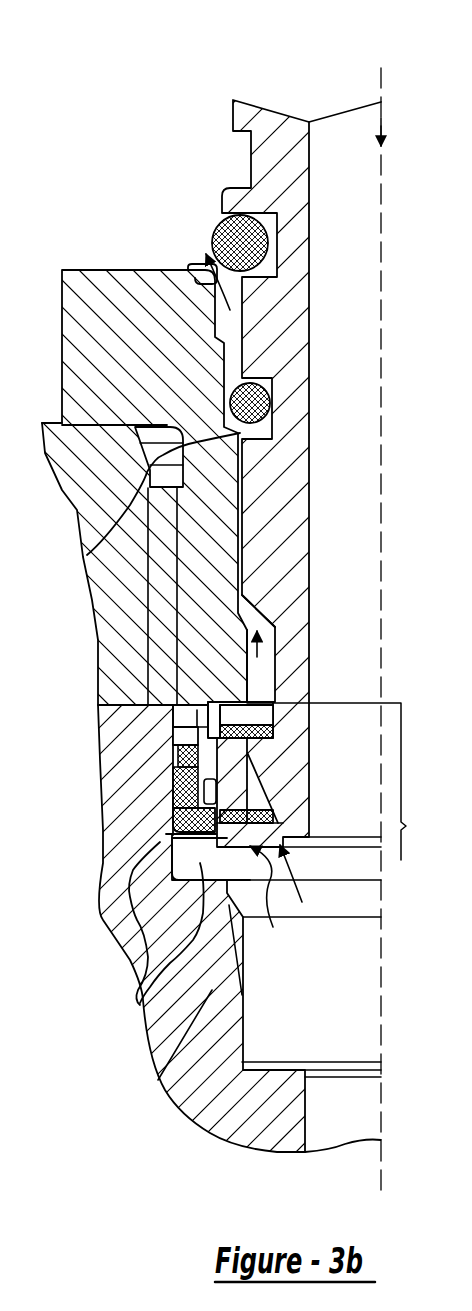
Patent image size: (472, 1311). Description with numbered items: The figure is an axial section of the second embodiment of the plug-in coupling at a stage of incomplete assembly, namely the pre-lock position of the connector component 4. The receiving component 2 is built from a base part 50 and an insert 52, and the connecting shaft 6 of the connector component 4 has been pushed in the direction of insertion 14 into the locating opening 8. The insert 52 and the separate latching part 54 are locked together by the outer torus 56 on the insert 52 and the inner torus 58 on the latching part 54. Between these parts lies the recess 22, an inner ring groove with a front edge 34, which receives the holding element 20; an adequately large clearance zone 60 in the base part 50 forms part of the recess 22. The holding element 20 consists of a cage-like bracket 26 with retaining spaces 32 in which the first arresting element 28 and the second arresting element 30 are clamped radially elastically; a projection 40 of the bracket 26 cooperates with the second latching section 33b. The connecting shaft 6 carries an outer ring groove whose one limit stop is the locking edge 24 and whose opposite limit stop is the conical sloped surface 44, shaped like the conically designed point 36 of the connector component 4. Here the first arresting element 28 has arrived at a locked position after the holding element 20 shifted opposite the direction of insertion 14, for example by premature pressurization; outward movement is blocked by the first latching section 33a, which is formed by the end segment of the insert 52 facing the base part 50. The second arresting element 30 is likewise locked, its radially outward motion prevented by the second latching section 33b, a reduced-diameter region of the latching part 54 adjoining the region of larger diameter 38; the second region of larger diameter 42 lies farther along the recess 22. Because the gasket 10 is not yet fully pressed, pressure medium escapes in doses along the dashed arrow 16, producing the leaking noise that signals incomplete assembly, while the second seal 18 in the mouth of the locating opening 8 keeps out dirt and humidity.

The receiving component 2 is at (130, 216).
The connector component 4 is at (236, 158).
The connecting shaft 6 is at (233, 100).
The locating opening 8 is at (87, 555).
The gasket 10 is at (272, 398).
The direction of insertion 14 is at (381, 128).
The dashed arrow (leakage flow) 16 is at (208, 268).
The second seal 18 is at (215, 218).
The holding element 20 is at (270, 922).
The recess 22 is at (340, 781).
The locking edge 24 is at (283, 752).
The bracket 26 is at (158, 1080).
The first arresting element 28 is at (270, 700).
The second arresting element 30 is at (283, 820).
The retaining space 32 is at (207, 707).
The first latching section 33a is at (197, 710).
The second latching section 33b is at (168, 832).
The front edge 34 is at (232, 700).
The conically designed point 36 is at (293, 762).
The region of larger diameter 38 is at (178, 812).
The projection 40 is at (204, 790).
The second region of larger diameter 42 is at (140, 1003).
The conical sloped surface 44 is at (258, 607).
The base part 50 is at (42, 420).
The insert 52 is at (120, 287).
The latching part 54 is at (123, 922).
The outer torus 56 is at (178, 752).
The inner torus 58 is at (185, 740).
The clearance zone 60 is at (127, 950).